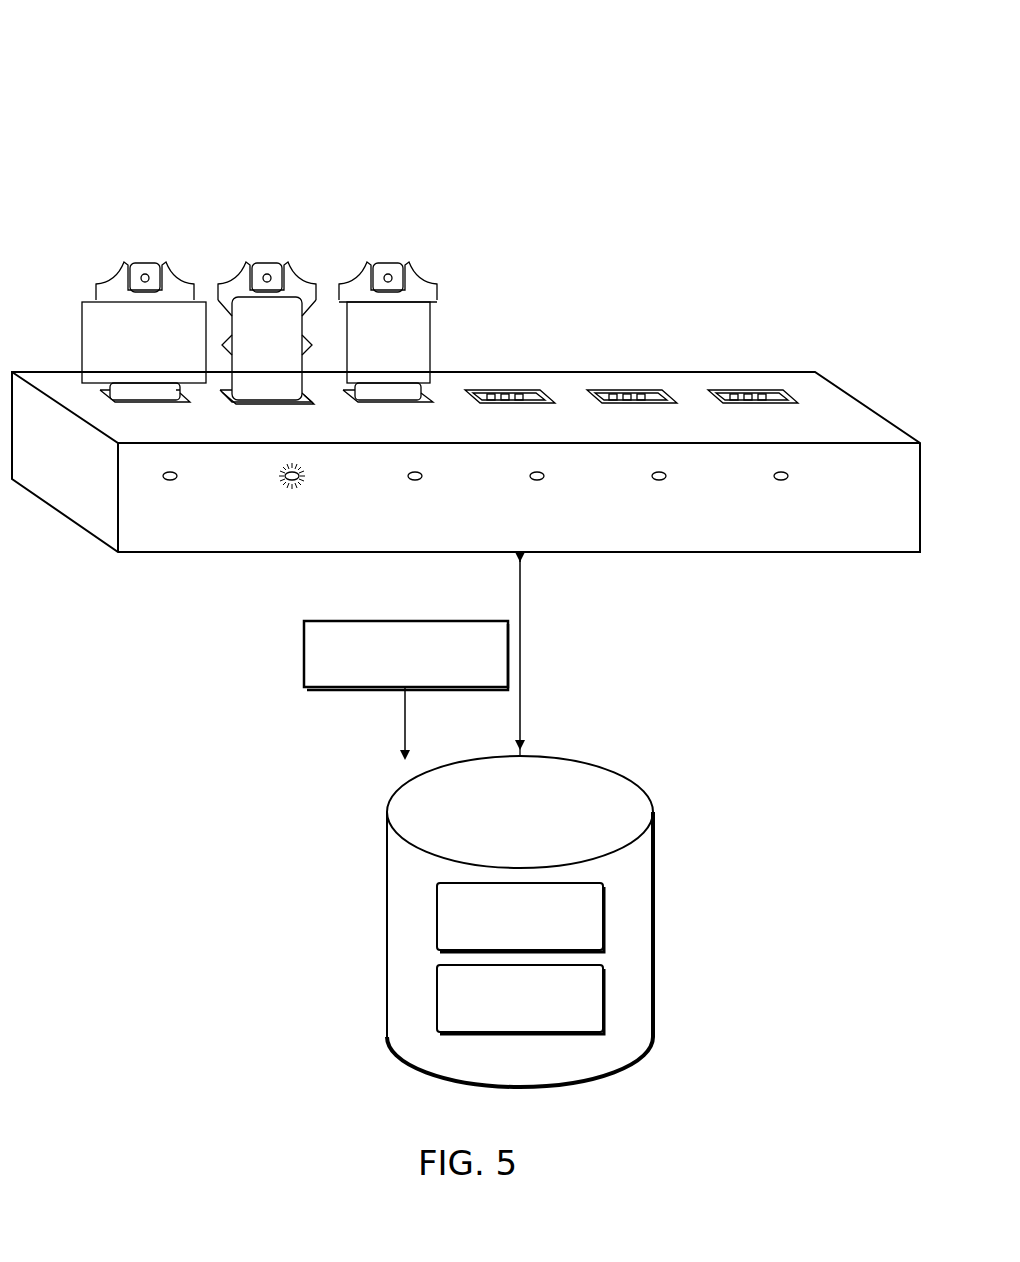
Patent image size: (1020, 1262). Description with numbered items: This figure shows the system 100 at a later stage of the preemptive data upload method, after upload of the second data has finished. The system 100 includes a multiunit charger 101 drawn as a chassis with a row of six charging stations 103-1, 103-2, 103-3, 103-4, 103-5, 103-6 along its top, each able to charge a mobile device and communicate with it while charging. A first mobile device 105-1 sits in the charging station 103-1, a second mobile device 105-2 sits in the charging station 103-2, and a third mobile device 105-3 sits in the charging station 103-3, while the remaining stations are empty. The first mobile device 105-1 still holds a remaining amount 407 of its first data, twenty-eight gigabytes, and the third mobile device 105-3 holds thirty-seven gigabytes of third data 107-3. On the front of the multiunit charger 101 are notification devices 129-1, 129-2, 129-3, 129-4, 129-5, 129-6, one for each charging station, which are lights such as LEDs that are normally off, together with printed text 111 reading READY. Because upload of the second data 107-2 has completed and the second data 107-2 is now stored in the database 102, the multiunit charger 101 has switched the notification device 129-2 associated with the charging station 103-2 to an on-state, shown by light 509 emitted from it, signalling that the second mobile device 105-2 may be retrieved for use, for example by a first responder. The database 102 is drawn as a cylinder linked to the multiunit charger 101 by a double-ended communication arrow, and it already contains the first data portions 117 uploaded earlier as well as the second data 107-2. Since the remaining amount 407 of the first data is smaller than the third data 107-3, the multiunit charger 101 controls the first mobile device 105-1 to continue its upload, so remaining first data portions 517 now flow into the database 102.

The system 100 is at (128, 38).
The multiunit charger 101 is at (62, 522).
The database 102 is at (388, 920).
The charging station 103-1 is at (155, 405).
The charging station 103-2 is at (280, 405).
The charging station 103-3 is at (400, 405).
The charging station 103-4 is at (522, 404).
The charging station 103-5 is at (644, 404).
The charging station 103-6 is at (765, 404).
The first mobile device 105-1 is at (115, 288).
The second mobile device 105-2 is at (247, 262).
The third mobile device 105-3 is at (425, 277).
The second data 107-2 is at (604, 1000).
The third data 107-3 is at (430, 335).
The text 111 is at (866, 484).
The first data portions 117 is at (604, 919).
The notification device 129-1 is at (171, 481).
The notification device 129-2 is at (293, 483).
The notification device 129-3 is at (416, 481).
The notification device 129-4 is at (538, 481).
The notification device 129-5 is at (660, 481).
The notification device 129-6 is at (782, 481).
The remaining amount of the first data 407 is at (82, 345).
The light 509 is at (280, 477).
The remaining first data portions 517 is at (304, 656).